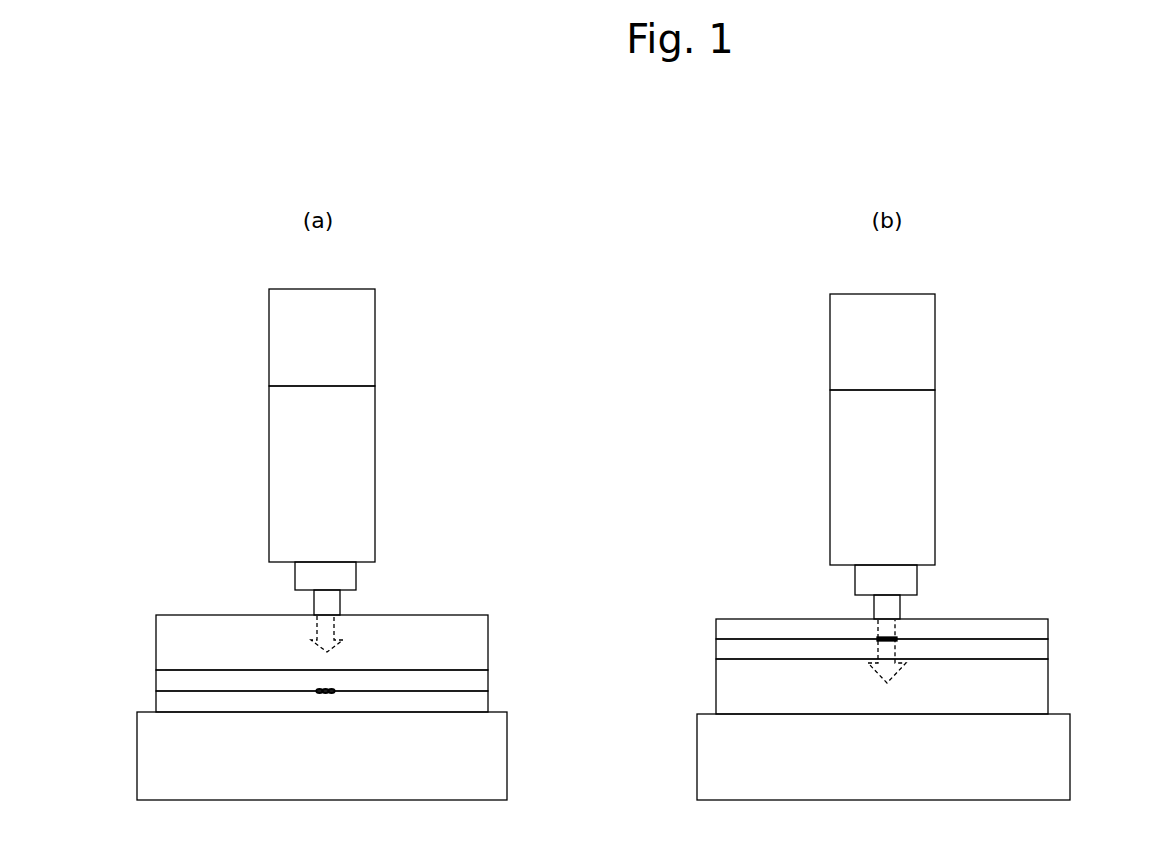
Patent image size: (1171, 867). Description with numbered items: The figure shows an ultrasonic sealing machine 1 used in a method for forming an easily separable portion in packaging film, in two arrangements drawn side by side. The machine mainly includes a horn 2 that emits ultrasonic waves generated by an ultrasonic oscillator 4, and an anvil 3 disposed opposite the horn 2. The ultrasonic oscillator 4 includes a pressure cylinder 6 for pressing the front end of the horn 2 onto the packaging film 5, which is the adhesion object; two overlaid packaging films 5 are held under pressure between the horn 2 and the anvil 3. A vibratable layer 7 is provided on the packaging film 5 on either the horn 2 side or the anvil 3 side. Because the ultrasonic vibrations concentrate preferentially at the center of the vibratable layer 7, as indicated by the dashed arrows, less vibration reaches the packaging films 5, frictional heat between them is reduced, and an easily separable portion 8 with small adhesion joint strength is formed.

The ultrasonic sealing machine 1 is at (403, 265).
The horn 2 is at (333, 603).
The anvil 3 is at (490, 757).
The ultrasonic oscillator 4 is at (342, 505).
The packaging film 5 is at (480, 683).
The pressure cylinder 6 is at (358, 340).
The vibratable layer 7 is at (465, 639).
The easily separable portion 8 is at (335, 691).